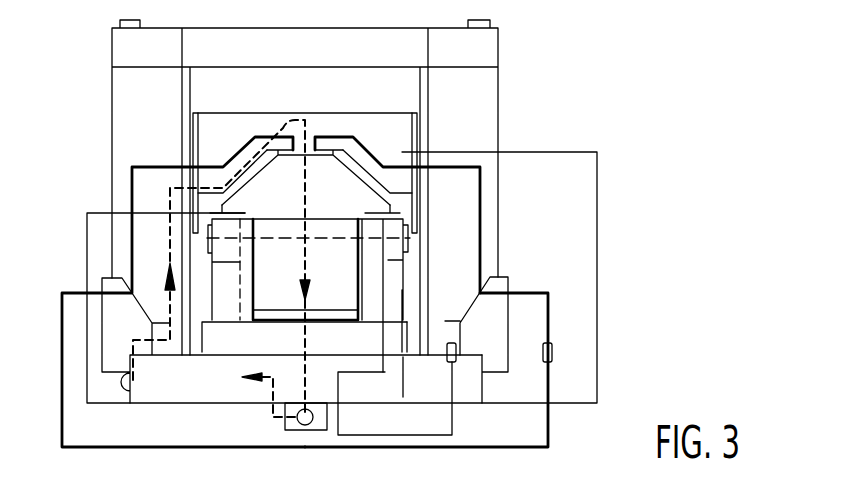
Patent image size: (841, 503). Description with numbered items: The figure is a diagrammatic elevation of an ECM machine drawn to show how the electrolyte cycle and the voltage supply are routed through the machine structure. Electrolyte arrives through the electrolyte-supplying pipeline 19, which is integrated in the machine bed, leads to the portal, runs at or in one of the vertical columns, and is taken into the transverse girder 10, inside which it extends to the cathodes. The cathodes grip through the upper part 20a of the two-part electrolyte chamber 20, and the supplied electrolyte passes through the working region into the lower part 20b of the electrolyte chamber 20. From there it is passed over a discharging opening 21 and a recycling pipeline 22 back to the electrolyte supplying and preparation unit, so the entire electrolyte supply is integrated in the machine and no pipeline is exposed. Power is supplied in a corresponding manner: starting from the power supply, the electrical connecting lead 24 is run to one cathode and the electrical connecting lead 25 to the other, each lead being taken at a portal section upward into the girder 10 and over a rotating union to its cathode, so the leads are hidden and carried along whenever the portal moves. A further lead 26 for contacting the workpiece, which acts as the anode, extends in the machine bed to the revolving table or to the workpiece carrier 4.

The workpiece carrier 4 is at (383, 273).
The transverse girder 10 is at (223, 133).
The electrolyte-supplying pipeline 19 is at (285, 122).
The electrolyte chamber 20 is at (350, 158).
The upper part of the electrolyte chamber 20a is at (400, 158).
The lower part of the electrolyte chamber 20b is at (347, 252).
The discharging opening 21 is at (312, 312).
The recycling pipeline 22 is at (330, 378).
The electrical connecting lead 24 is at (363, 188).
The electrical connecting lead 25 is at (230, 157).
The further lead 26 is at (387, 338).